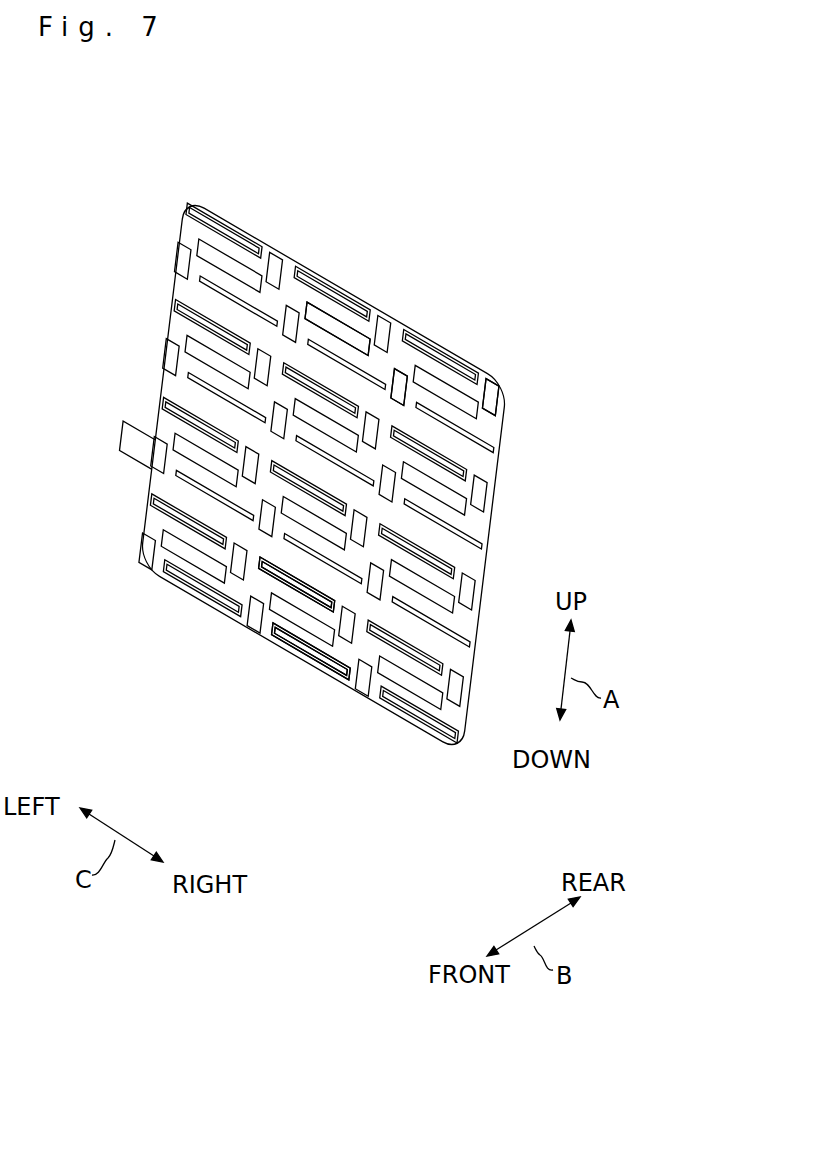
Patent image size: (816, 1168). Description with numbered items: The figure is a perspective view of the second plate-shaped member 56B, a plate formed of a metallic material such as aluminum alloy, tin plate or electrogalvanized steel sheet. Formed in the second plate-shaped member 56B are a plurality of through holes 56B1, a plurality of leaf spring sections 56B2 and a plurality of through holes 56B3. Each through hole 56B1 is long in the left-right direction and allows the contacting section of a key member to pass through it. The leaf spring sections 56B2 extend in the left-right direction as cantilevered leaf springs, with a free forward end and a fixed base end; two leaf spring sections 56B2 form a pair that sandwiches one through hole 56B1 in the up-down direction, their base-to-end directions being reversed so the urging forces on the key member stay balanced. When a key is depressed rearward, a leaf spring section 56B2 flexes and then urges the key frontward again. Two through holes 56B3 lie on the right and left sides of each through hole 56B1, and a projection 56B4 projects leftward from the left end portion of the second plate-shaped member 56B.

The second plate-shaped member 56B is at (405, 210).
The through hole 56B1 is at (327, 318).
The leaf spring section 56B2 is at (282, 582).
The through hole 56B3 is at (491, 398).
The projection 56B4 is at (122, 440).